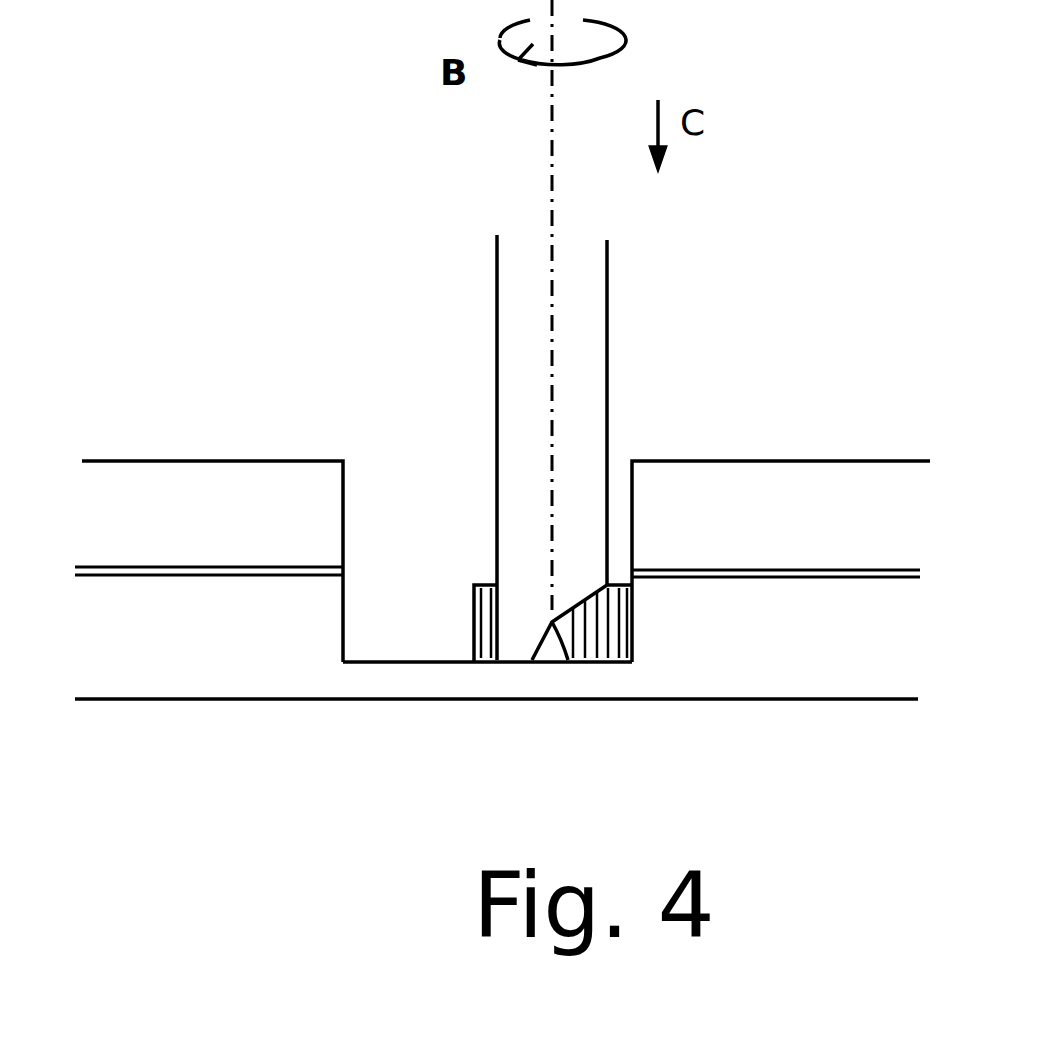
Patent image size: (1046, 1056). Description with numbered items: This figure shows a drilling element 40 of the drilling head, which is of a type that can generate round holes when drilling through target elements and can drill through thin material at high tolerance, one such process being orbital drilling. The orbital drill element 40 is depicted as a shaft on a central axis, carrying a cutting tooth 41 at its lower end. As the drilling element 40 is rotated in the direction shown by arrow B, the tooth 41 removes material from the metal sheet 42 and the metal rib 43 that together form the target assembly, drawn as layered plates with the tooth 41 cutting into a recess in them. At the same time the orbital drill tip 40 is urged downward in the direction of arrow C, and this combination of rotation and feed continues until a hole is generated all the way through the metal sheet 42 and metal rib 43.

The drilling element 40 is at (578, 422).
The cutting tooth 41 is at (610, 665).
The metal sheet 42 is at (800, 536).
The metal rib 43 is at (800, 656).